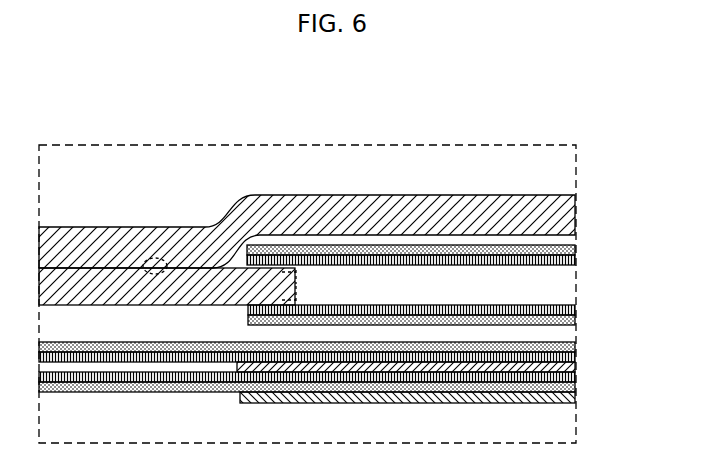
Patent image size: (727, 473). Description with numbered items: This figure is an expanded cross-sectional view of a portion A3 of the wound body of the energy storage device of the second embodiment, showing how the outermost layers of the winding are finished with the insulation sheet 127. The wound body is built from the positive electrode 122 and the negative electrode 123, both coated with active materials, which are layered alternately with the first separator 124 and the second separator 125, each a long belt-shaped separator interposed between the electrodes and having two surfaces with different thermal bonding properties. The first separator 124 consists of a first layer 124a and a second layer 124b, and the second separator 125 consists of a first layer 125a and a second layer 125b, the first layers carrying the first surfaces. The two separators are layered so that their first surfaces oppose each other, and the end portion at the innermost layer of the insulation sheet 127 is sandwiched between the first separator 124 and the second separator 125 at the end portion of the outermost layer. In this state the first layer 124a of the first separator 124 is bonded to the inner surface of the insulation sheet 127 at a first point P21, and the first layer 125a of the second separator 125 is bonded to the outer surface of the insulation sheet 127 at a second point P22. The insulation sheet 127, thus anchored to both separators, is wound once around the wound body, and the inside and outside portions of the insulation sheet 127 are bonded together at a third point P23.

The region of display panel A3 is at (343, 145).
The insulation sheet 127 is at (300, 210).
The second separator 125 is at (367, 297).
The first layer of the second separator 125a is at (576, 260).
The second layer of the second separator 125b is at (576, 250).
The first separator 124 is at (367, 371).
The first layer of the first separator 124a is at (576, 310).
The second layer of the first separator 124b is at (576, 320).
The negative electrode 123 is at (576, 367).
The positive electrode 122 is at (576, 397).
The first point P21 is at (300, 292).
The second point P22 is at (300, 277).
The third point P23 is at (152, 258).